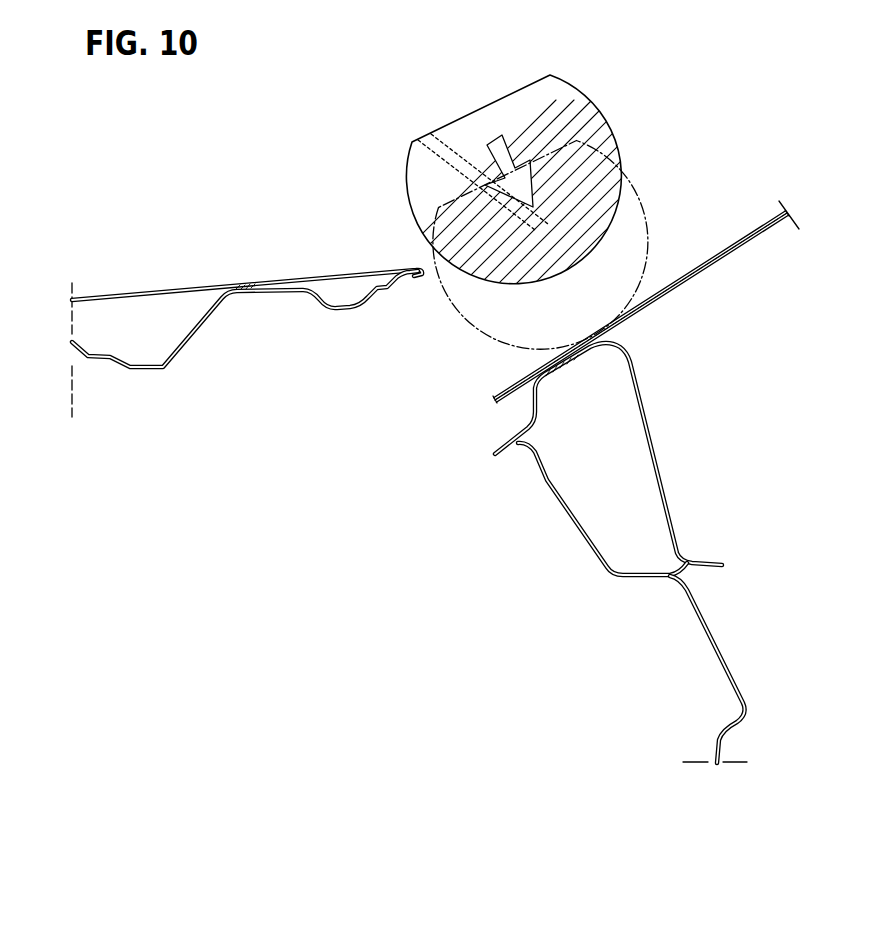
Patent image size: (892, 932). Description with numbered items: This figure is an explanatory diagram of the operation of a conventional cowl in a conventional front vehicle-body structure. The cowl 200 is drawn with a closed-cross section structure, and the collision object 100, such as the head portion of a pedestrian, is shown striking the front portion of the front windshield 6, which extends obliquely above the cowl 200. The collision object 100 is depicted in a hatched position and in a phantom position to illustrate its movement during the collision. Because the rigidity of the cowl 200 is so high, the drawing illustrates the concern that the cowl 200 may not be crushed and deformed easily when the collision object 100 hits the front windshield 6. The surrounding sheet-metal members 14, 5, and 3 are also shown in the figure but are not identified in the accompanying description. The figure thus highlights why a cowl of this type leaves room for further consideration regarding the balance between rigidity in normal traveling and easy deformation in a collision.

The collision object 100 is at (594, 111).
The reinforcing plate 14 is at (745, 230).
The front windshield 6 is at (699, 262).
The floor panel 5 is at (172, 287).
The cowl 200 is at (672, 470).
The side sill 3 is at (691, 632).